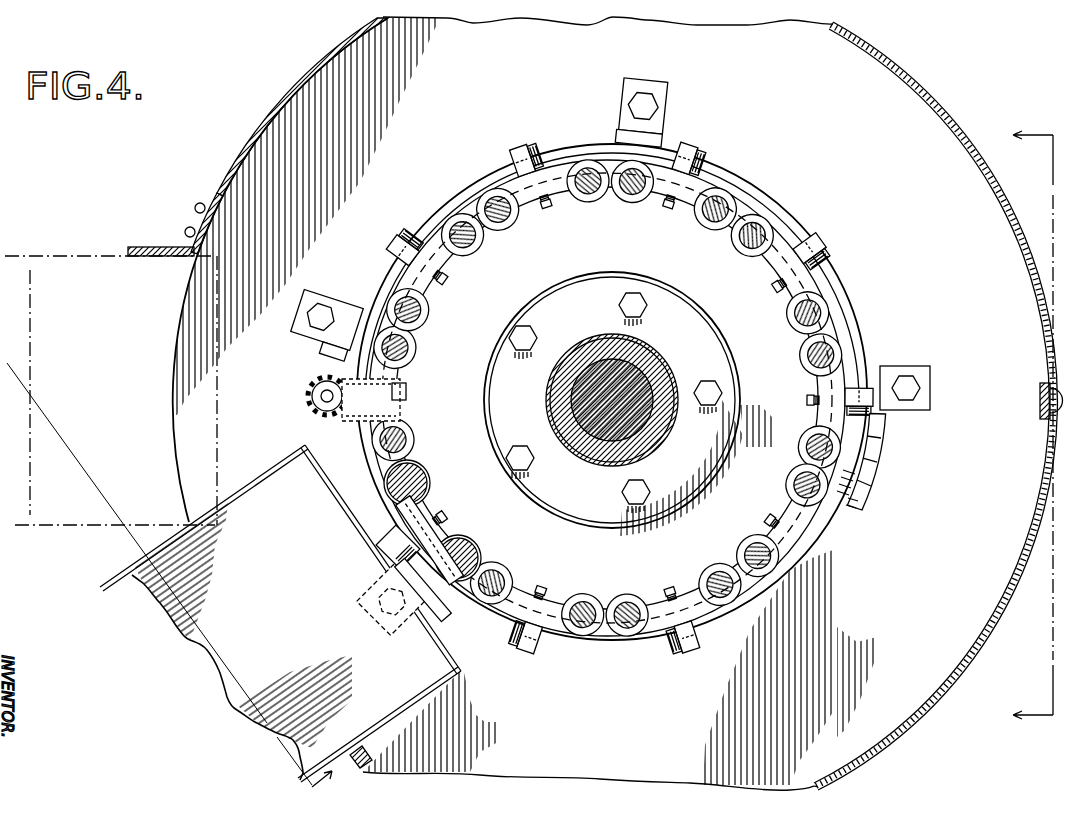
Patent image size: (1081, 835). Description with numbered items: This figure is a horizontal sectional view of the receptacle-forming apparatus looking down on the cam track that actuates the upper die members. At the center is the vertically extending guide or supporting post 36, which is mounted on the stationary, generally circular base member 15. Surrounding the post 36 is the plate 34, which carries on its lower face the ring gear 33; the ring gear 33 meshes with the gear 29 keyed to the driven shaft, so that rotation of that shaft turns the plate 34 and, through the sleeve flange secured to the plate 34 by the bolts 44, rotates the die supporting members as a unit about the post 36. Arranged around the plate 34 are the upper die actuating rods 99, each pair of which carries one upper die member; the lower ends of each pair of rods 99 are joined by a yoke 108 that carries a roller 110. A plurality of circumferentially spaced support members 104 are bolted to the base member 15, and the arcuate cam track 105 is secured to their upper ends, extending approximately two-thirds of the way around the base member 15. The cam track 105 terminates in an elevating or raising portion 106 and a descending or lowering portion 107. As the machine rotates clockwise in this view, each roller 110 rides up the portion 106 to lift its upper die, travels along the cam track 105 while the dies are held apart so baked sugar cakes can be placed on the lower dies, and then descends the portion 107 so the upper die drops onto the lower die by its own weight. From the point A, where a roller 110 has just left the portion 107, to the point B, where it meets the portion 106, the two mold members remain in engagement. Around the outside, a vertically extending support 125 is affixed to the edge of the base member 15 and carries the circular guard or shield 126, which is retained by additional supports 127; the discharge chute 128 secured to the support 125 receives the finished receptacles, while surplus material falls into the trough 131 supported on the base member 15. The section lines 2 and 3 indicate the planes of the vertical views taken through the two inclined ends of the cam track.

The base member 15 is at (525, 403).
The circular guard or shield 126 is at (306, 80).
The supports 127 is at (1043, 395).
The vertically extending support 125 is at (160, 247).
The discharge chute 128 is at (95, 255).
The trough 131 is at (143, 583).
The section line 2- 2 is at (174, 579).
The section line 3- 3 is at (1033, 427).
The cam track 105 is at (435, 206).
The die lifting or actuating rods 99 is at (606, 398).
The yoke 108 is at (782, 297).
The roller 110 is at (826, 248).
The support members 104 is at (656, 140).
The plate 34 is at (616, 282).
The guide or supporting post 36 is at (640, 372).
The bolts 44 is at (609, 403).
The gear 29 is at (315, 404).
The ring gear 33 is at (400, 413).
The inclined elevating portion 106 is at (362, 478).
The point B is at (445, 606).
The inclined lowering portion 107 is at (864, 424).
The point A is at (843, 494).